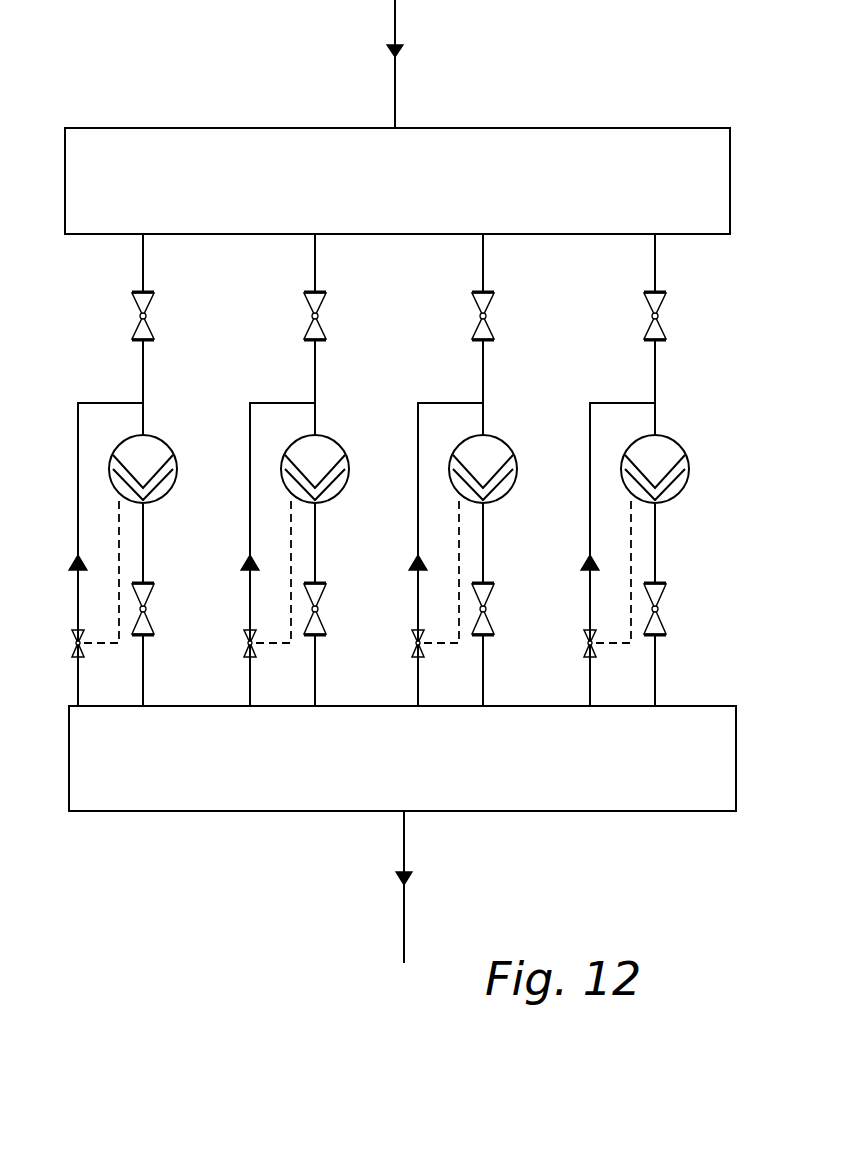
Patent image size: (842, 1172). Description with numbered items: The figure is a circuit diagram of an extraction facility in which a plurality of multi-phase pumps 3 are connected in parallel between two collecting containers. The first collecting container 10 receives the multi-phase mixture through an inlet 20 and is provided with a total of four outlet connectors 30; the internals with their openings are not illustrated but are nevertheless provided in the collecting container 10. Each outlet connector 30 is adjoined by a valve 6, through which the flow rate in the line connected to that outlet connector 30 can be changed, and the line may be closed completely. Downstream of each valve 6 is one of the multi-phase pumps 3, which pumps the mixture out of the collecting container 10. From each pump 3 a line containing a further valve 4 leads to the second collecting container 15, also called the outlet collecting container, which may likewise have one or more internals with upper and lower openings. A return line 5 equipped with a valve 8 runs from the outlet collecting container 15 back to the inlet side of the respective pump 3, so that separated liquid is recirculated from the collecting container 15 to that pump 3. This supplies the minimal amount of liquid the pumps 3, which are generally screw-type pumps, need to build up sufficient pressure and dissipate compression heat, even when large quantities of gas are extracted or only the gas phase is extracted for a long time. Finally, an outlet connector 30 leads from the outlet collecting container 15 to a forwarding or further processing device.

The multi-phase pump 3 is at (163, 448).
The valve 4 is at (156, 601).
The return line 5 is at (75, 510).
The valve 6 is at (155, 318).
The valve 8 is at (70, 641).
The first collecting container 10 is at (577, 134).
The second collecting container 15 is at (706, 703).
The inlet 20 is at (397, 75).
The outlet connector 30 is at (145, 260).